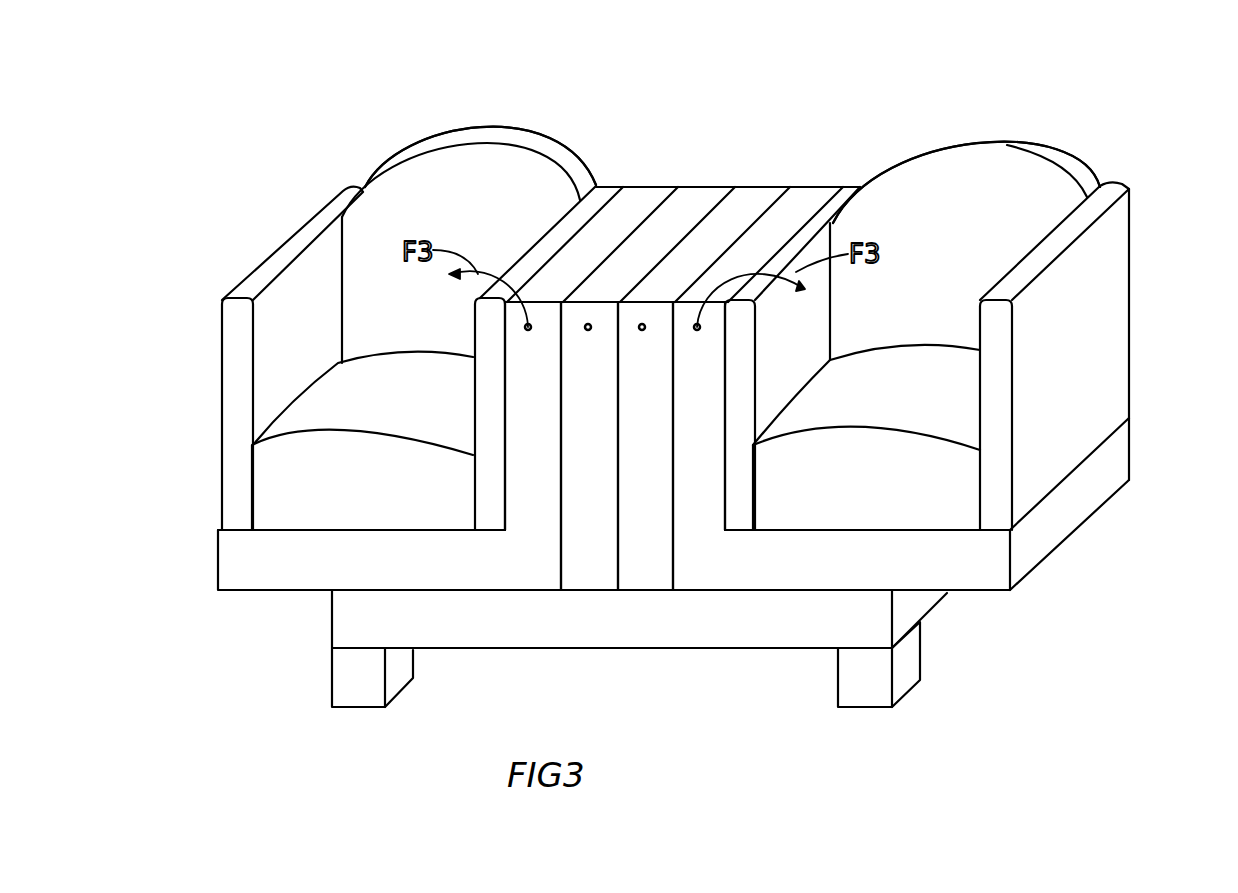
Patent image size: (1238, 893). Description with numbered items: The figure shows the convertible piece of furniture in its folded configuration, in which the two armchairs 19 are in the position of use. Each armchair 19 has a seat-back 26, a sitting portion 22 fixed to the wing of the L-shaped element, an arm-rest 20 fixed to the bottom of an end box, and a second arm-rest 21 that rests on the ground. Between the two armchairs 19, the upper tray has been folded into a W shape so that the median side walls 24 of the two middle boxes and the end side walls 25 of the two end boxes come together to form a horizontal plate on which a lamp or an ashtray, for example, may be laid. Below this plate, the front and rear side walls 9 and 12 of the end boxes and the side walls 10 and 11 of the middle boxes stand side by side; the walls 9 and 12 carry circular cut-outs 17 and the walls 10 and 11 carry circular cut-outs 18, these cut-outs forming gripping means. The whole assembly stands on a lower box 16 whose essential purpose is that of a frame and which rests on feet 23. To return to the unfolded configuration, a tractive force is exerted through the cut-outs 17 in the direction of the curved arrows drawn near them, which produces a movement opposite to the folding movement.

The front side wall 9 is at (533, 446).
The side wall 10 is at (589, 446).
The side wall 11 is at (645, 446).
The rear side wall 12 is at (698, 446).
The box 16 is at (608, 634).
The circular cut-out 17 is at (526, 329).
The circular cut-out 18 is at (641, 330).
The armchair 19 is at (519, 104).
The arm-rest 20 is at (604, 193).
The arm-rest 21 is at (232, 342).
The sitting portion 22 is at (616, 437).
The feet 23 is at (353, 693).
The median side wall 24 is at (750, 200).
The end side wall 25 is at (652, 198).
The seat-back 26 is at (721, 175).